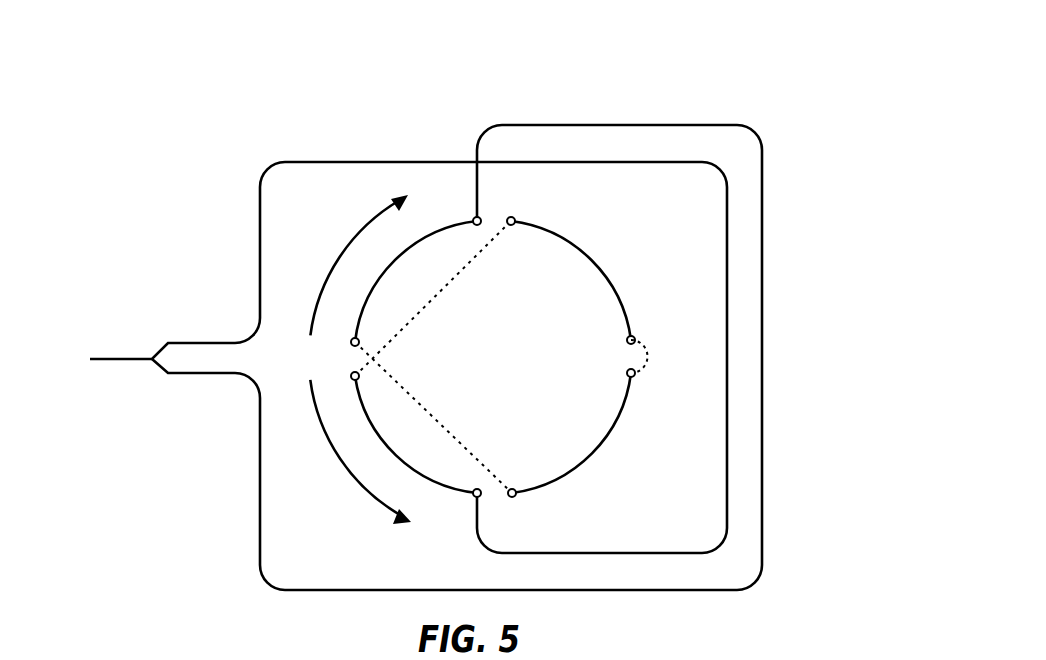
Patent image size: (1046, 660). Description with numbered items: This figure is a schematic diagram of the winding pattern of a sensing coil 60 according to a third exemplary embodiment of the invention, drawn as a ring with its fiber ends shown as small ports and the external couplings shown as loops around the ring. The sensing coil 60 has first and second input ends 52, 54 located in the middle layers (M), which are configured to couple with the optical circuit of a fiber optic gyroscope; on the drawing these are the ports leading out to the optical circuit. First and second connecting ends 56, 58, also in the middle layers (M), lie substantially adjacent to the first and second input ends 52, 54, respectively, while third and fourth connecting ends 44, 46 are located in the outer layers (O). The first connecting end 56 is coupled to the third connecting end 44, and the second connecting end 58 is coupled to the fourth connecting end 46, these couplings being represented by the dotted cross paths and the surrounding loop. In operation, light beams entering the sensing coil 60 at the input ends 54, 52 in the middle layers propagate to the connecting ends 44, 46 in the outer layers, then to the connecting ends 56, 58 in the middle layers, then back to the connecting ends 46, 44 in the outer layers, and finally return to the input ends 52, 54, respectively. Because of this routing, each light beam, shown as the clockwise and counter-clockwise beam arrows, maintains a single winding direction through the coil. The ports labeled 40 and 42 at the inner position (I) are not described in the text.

The sensing coil 60 is at (636, 56).
The first input port 40 is at (634, 337).
The second input port 42 is at (636, 375).
The third connecting end 44 is at (360, 378).
The fourth connecting end 46 is at (360, 343).
The first input end 52 is at (476, 226).
The second input end 54 is at (477, 489).
The first connecting end 56 is at (513, 217).
The second connecting end 58 is at (516, 497).